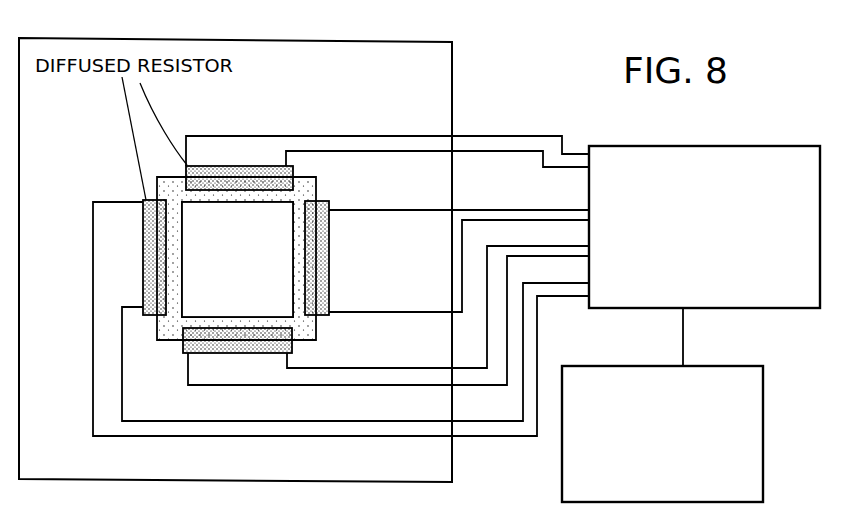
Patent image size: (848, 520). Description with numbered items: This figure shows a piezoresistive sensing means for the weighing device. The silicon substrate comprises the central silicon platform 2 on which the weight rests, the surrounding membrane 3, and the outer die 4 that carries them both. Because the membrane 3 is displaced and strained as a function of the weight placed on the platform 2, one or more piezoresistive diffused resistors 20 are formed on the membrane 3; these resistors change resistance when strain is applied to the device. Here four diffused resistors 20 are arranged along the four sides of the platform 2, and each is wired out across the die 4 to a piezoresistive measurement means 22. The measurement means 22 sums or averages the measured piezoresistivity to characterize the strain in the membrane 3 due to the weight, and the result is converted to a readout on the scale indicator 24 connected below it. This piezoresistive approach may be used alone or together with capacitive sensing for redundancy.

The silicon platform 2 is at (203, 226).
The membrane 3 is at (305, 197).
The die 4 is at (400, 72).
The piezoresistive diffused resistors 20 is at (245, 187).
The measurement means 22 is at (705, 167).
The scale indicator 24 is at (725, 383).